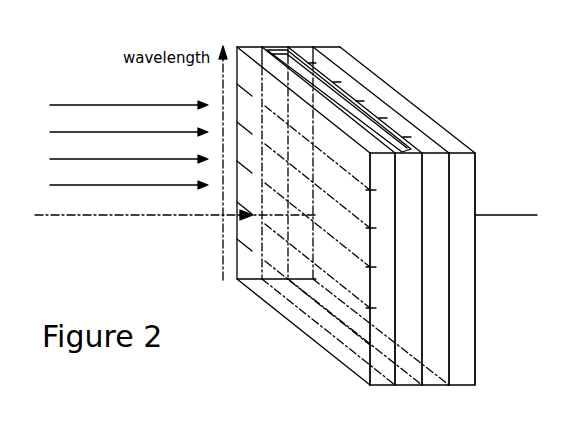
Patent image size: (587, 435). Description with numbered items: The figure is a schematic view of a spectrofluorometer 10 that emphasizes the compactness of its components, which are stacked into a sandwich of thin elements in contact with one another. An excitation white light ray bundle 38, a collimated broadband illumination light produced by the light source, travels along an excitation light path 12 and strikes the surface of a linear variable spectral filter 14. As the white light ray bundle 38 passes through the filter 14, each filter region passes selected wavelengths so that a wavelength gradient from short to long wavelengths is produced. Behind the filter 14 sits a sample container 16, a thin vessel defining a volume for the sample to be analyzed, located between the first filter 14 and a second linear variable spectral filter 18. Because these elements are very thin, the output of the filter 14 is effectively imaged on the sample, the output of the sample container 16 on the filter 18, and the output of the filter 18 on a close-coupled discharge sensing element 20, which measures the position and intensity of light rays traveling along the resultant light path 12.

The spectrofluorometer 10 is at (271, 47).
The excitation light path 12 is at (139, 211).
The linear variable spectral filter 14 is at (384, 385).
The sample container 16 is at (403, 385).
The second linear variable spectral filter 18 is at (441, 385).
The close-coupled discharge (CCD) sensing element 20 is at (463, 379).
The excitation white light ray bundle 38 is at (95, 88).